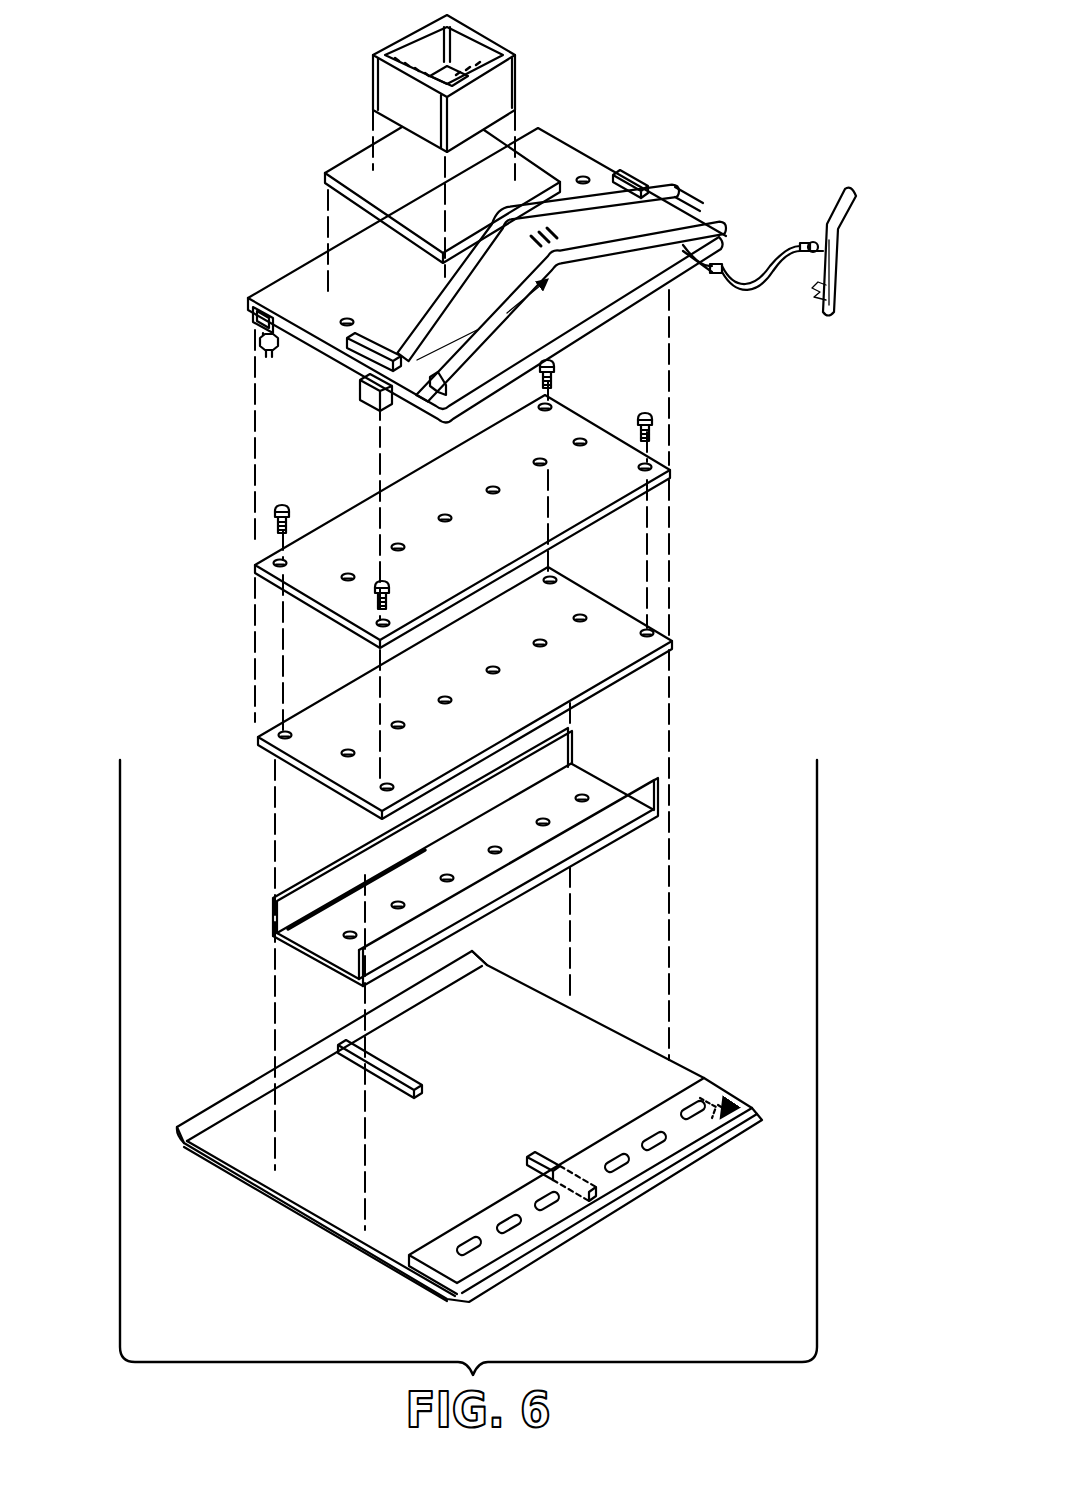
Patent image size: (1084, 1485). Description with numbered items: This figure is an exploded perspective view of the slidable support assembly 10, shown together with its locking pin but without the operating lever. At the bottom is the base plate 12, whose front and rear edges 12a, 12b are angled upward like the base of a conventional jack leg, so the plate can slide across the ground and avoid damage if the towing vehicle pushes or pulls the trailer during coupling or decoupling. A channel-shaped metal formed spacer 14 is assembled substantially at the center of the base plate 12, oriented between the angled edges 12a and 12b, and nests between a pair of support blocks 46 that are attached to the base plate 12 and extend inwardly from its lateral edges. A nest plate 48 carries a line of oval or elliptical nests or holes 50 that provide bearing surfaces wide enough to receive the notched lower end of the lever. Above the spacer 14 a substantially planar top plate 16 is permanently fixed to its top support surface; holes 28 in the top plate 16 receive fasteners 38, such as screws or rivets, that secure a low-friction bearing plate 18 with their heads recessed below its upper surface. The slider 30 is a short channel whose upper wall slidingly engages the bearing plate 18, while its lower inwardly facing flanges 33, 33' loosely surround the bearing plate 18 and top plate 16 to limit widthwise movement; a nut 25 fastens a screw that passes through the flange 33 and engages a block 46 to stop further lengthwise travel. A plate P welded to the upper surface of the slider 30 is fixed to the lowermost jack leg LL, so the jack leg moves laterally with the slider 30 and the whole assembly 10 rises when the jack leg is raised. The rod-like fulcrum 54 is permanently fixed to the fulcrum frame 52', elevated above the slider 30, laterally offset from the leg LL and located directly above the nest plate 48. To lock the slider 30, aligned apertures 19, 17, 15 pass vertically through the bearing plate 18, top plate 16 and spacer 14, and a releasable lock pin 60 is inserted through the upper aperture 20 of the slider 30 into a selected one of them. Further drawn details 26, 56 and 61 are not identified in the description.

The slidable support assembly 10 is at (700, 557).
The base plate 12 is at (456, 1126).
The front edge 12a is at (226, 1096).
The rear edge 12b is at (583, 1183).
The spacer 14 is at (465, 857).
The aperture 15 is at (348, 939).
The top plate 16 is at (488, 683).
The aperture 17 is at (348, 748).
The low-friction bearing plate 18 is at (484, 515).
The aperture 19 is at (348, 572).
The upper aperture 20 is at (586, 177).
The nut 25 is at (265, 355).
The corner hole 26 is at (652, 630).
The holes 28 is at (651, 465).
The slider 30 is at (579, 131).
The flange 33 is at (234, 332).
The flange 33' is at (350, 408).
The fasteners 38 is at (640, 414).
The support blocks 46 is at (389, 1068).
The nest plate 48 is at (489, 1215).
The nests 50 is at (683, 1116).
The fulcrum frame 52' is at (726, 194).
The fulcrum 54 is at (517, 253).
The front frame tube 56 is at (603, 313).
The releasable lock pin 60 is at (838, 215).
The retaining cable 61 is at (760, 285).
The lower jack leg LL is at (495, 93).
The plate P is at (403, 195).